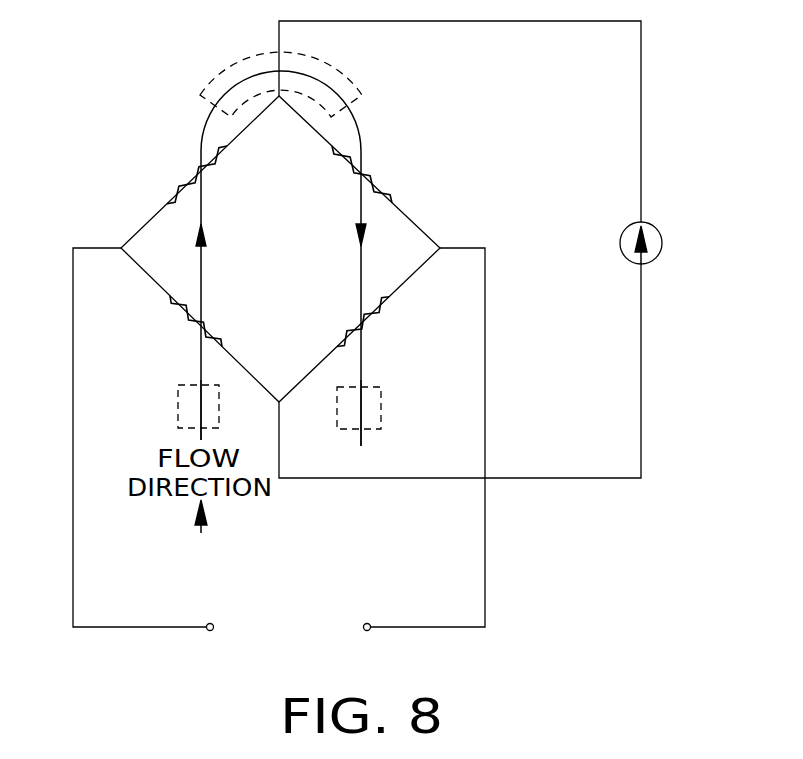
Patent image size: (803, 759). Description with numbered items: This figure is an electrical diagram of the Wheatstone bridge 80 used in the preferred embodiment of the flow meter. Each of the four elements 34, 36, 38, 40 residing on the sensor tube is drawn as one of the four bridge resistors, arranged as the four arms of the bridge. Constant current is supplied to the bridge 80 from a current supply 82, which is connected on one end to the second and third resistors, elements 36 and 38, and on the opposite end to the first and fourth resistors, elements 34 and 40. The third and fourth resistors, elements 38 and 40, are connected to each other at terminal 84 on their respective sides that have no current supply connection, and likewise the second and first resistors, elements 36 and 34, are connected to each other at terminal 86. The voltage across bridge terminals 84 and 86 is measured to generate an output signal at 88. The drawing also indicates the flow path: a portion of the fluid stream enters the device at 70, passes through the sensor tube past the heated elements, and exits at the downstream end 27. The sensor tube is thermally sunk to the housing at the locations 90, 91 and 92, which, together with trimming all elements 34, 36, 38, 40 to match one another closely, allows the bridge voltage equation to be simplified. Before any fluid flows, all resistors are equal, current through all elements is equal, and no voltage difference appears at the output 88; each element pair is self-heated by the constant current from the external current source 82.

The downstream end 27 is at (363, 440).
The element 34 is at (178, 315).
The element 36 is at (180, 188).
The element 38 is at (385, 190).
The element 40 is at (383, 312).
The flow meter entry point 70 is at (196, 436).
The Wheatstone bridge 80 is at (296, 283).
The current supply 82 is at (658, 252).
The bridge terminal 84 is at (440, 246).
The bridge terminal 86 is at (121, 247).
The output signal 88 is at (340, 640).
The thermal sink location 90 is at (178, 400).
The thermal sink location 91 is at (212, 78).
The thermal sink location 92 is at (382, 410).